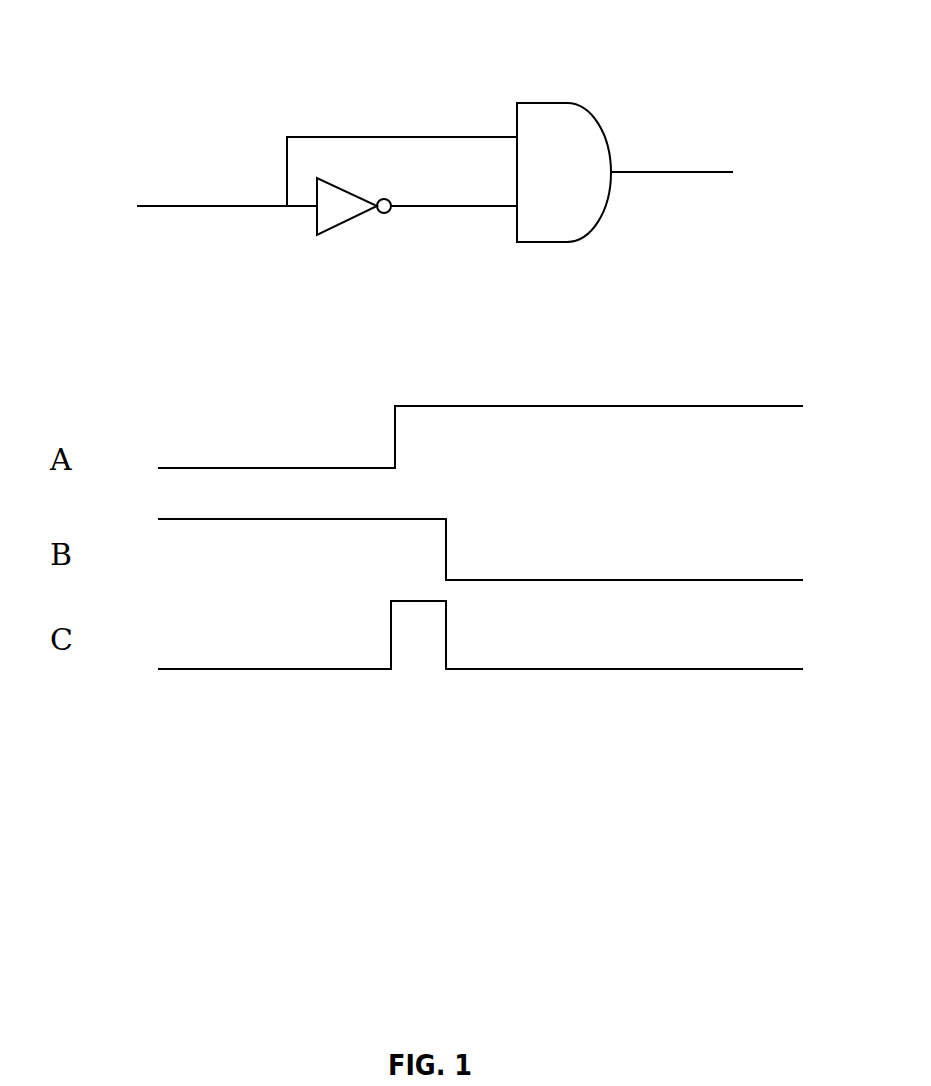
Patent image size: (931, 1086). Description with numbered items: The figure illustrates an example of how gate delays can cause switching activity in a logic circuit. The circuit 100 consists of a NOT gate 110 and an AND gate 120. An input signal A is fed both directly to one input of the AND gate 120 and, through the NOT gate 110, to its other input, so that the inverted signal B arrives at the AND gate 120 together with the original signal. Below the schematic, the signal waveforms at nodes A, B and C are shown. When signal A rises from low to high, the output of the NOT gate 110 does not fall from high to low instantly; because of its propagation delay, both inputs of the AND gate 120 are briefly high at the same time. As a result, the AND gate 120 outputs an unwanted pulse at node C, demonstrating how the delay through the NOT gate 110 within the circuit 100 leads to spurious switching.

The circuit 100 is at (485, 169).
The NOT gate 110 is at (303, 254).
The AND gate 120 is at (535, 88).